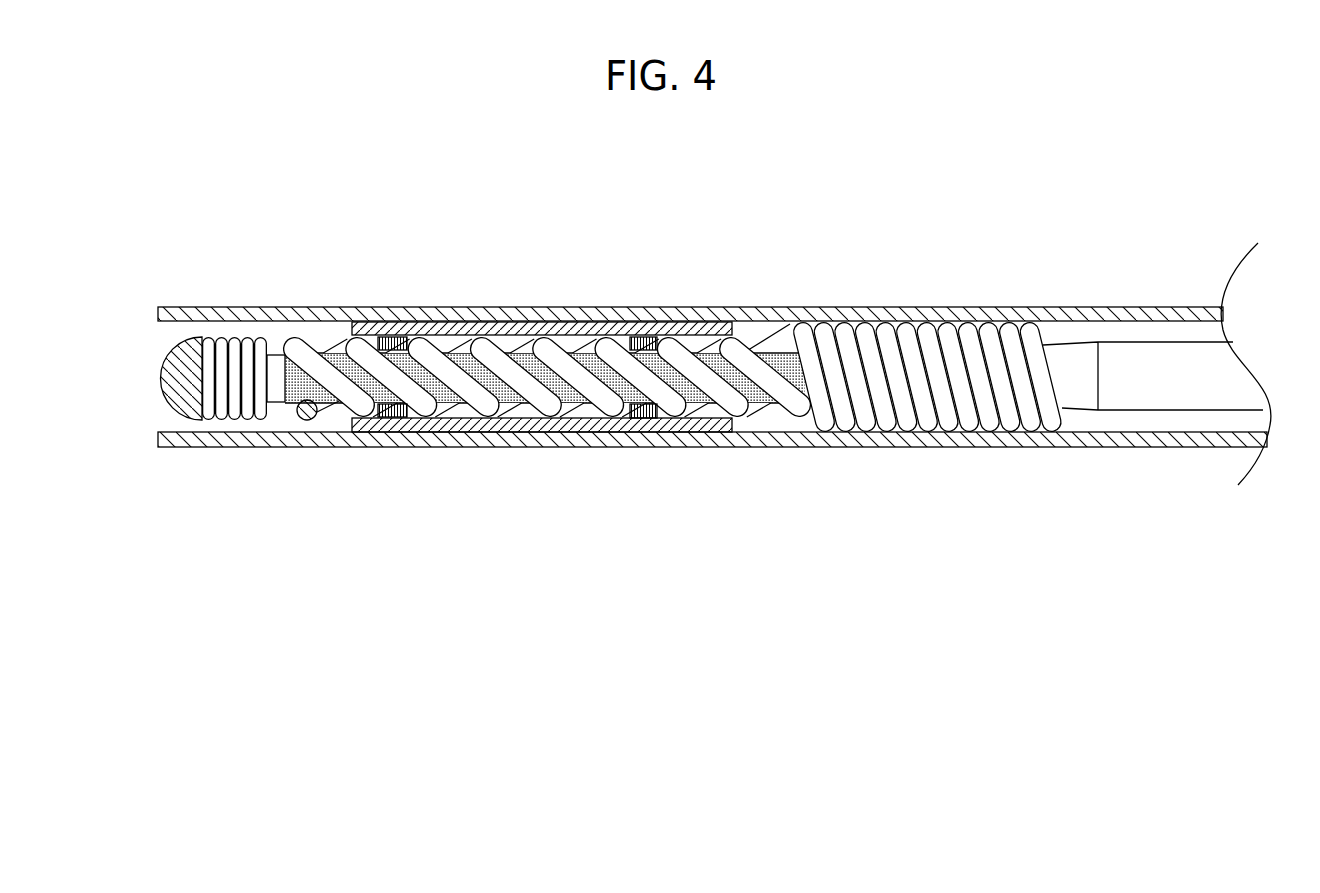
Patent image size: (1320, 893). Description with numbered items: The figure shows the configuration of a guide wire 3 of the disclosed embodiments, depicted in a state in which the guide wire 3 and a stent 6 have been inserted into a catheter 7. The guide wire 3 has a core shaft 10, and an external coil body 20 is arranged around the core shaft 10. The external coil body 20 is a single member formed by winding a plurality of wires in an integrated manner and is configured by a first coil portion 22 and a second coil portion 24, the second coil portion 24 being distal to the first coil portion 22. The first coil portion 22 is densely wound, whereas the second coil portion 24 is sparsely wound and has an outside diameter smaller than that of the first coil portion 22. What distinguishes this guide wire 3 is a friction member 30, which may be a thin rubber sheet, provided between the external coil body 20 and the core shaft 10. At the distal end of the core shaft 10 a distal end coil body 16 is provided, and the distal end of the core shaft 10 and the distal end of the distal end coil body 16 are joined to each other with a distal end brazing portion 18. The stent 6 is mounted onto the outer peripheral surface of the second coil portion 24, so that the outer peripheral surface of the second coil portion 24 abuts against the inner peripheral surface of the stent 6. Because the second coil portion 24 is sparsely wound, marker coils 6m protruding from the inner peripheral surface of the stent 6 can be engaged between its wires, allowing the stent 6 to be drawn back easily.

The guide wire 3 is at (1138, 337).
The catheter 7 is at (612, 312).
The friction member 30 is at (510, 332).
The stent 6 is at (510, 426).
The marker coils 6m is at (388, 410).
The distal end coil body 16 is at (232, 343).
The distal end brazing portion 18 is at (173, 402).
The second coil portion 24 is at (603, 395).
The first coil portion 22 is at (927, 433).
The external coil body 20 is at (659, 461).
The core shaft 10 is at (1158, 403).